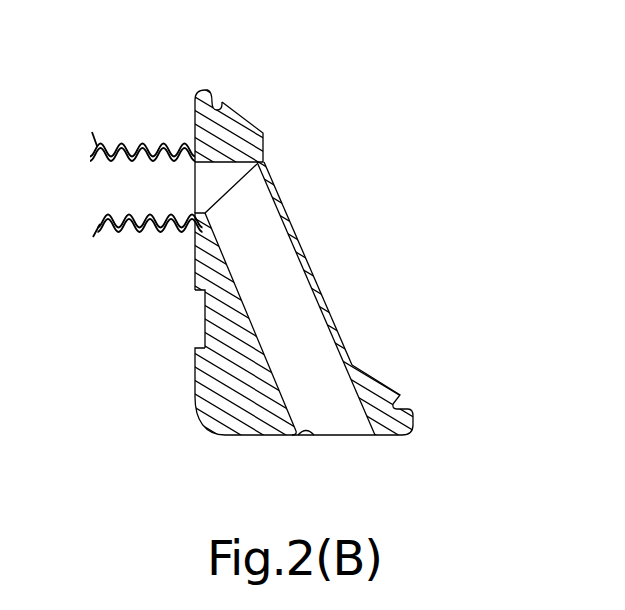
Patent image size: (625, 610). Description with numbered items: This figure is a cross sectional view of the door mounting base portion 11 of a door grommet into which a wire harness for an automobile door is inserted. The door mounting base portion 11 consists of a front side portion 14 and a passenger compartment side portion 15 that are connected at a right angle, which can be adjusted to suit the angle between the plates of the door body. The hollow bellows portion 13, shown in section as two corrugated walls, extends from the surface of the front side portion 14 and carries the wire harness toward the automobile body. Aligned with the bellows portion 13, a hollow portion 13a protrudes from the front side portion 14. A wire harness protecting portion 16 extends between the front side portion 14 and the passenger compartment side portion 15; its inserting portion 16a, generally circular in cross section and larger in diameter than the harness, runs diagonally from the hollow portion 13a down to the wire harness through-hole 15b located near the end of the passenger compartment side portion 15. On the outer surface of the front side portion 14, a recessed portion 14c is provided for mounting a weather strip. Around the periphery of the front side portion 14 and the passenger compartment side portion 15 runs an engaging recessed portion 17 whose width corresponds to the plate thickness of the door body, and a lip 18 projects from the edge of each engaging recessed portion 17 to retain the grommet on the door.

The door mounting base portion 11 is at (307, 305).
The bellows portion 13 is at (100, 224).
The hollow portion 13a is at (210, 178).
The front side portion 14 is at (193, 268).
The recessed portion 14c is at (195, 348).
The passenger compartment side portion 15 is at (243, 418).
The wire harness through-hole 15b is at (317, 436).
The wire harness protecting portion 16 is at (283, 203).
The inserting portion 16a is at (293, 254).
The engaging recessed portion 17 is at (222, 102).
The lip 18 is at (205, 90).